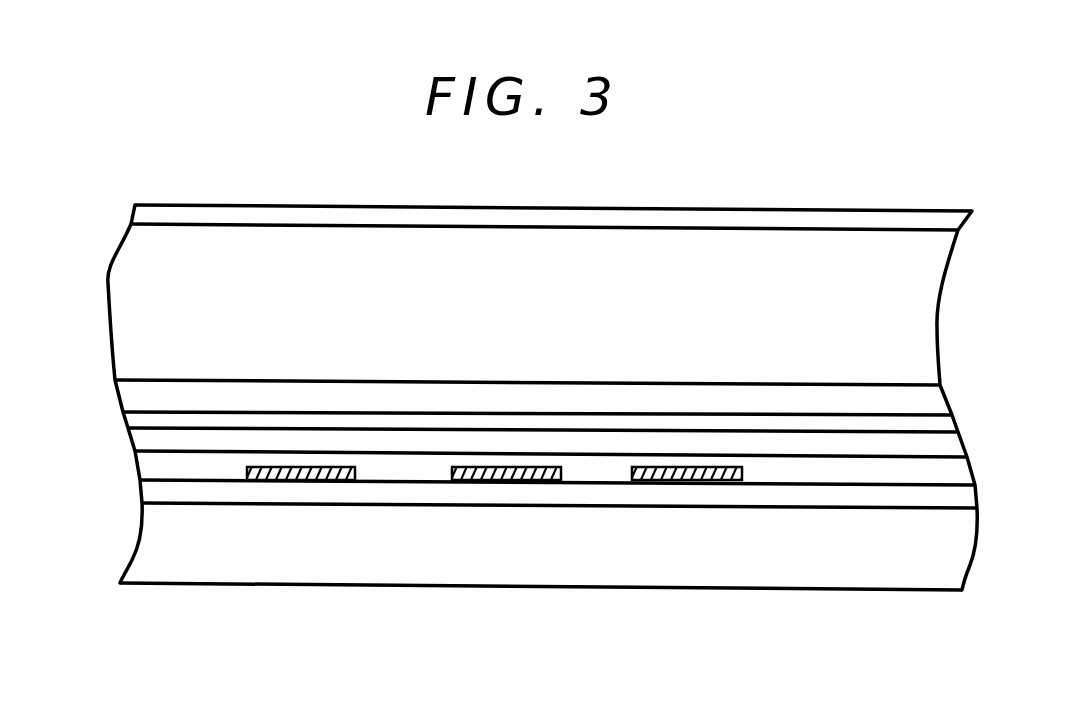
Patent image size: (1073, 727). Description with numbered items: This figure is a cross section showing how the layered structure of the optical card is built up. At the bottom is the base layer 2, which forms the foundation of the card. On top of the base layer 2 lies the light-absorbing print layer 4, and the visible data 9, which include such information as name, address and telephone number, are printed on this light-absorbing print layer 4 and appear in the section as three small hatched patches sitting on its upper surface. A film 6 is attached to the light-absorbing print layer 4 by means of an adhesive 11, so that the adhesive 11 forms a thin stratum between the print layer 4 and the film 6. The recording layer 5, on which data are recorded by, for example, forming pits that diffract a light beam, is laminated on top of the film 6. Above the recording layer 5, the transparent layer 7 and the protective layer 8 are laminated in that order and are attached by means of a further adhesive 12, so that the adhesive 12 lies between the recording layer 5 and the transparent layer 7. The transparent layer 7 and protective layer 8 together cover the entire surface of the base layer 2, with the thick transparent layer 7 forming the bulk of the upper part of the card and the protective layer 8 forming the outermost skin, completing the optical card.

The base layer 2 is at (842, 562).
The light-absorbing print layer 4 is at (950, 498).
The recording layer 5 is at (940, 428).
The film 6 is at (942, 449).
The transparent layer 7 is at (912, 333).
The protective layer 8 is at (950, 222).
The visible data 9 is at (267, 478).
The adhesive 11 is at (947, 473).
The adhesive 12 is at (930, 402).